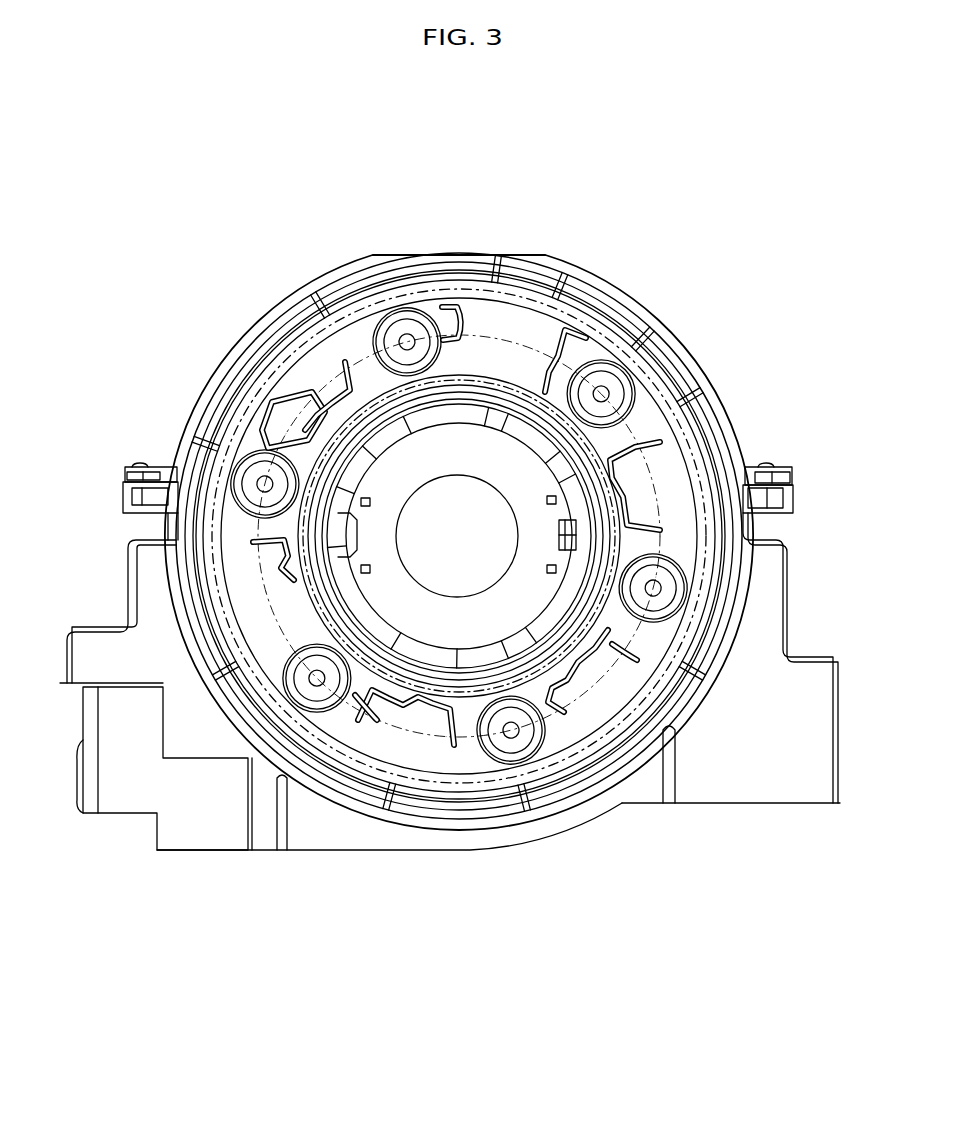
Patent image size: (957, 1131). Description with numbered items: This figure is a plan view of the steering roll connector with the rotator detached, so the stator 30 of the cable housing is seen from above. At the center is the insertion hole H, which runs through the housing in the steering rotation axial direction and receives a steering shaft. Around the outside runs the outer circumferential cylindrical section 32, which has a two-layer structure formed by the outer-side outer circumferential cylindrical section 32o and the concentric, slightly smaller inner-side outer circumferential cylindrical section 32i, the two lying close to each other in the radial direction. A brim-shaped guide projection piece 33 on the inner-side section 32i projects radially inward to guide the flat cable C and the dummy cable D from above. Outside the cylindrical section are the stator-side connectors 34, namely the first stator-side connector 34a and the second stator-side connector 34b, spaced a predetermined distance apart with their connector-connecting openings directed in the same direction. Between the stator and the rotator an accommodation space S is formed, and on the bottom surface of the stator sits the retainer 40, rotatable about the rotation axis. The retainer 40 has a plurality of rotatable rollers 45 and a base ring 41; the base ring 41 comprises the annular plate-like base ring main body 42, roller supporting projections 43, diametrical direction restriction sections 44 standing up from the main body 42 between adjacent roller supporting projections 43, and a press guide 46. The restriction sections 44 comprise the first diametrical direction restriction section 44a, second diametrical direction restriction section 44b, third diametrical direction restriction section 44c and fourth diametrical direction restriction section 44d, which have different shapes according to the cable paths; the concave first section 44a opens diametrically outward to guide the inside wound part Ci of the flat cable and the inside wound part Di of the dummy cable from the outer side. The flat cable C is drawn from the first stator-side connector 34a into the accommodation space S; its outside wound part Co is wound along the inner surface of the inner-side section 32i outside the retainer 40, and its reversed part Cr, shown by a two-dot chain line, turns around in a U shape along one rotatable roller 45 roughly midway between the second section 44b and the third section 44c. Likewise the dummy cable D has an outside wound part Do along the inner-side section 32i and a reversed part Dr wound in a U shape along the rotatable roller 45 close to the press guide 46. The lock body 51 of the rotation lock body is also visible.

The stator 30 is at (328, 262).
The guide projection piece 33 is at (335, 322).
The retainer 40 is at (779, 240).
The base ring 41 is at (757, 309).
The base ring main body 42 is at (640, 412).
The roller supporting projections 43 is at (655, 338).
The diametrical direction restriction sections 44 is at (445, 642).
The first diametrical direction restriction section 44a is at (318, 405).
The second diametrical direction restriction section 44b is at (338, 327).
The third diametrical direction restriction section 44c is at (580, 337).
The fourth diametrical direction restriction section 44d is at (660, 462).
The rotatable rollers 45 is at (630, 315).
The press guide 46 is at (290, 385).
The lock body 51 is at (667, 640).
The outer circumferential cylindrical section 32 is at (77, 538).
The outer-side outer circumferential cylindrical section 32o is at (175, 548).
The inner-side outer circumferential cylindrical section 32i is at (187, 607).
The stator-side connectors 34 is at (389, 826).
The first stator-side connector 34a is at (212, 853).
The second stator-side connector 34b is at (733, 805).
The flat cable C is at (533, 200).
The inside wound part of the flat cable Ci is at (450, 297).
The reversed part of the flat cable Cr is at (505, 330).
The outside wound part of the flat cable Co is at (537, 340).
The dummy cable D is at (112, 343).
The outside wound part of the dummy cable Do is at (225, 355).
The reversed part of the dummy cable Dr is at (262, 436).
The inside wound part of the dummy cable Di is at (305, 555).
The insertion hole H is at (465, 545).
The accommodation space S is at (603, 695).